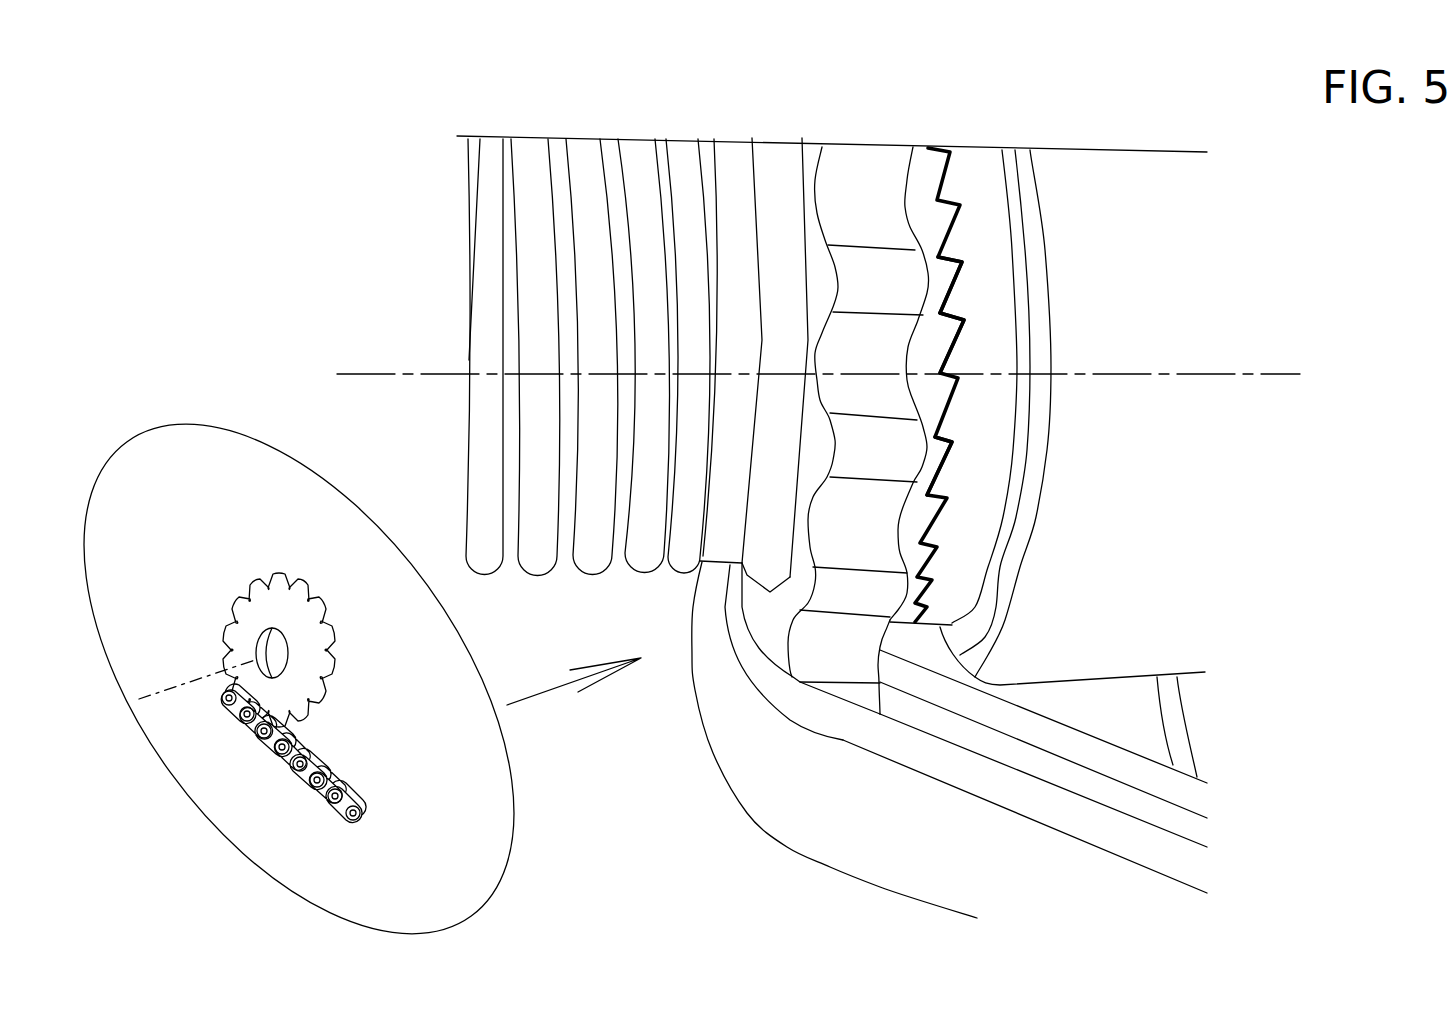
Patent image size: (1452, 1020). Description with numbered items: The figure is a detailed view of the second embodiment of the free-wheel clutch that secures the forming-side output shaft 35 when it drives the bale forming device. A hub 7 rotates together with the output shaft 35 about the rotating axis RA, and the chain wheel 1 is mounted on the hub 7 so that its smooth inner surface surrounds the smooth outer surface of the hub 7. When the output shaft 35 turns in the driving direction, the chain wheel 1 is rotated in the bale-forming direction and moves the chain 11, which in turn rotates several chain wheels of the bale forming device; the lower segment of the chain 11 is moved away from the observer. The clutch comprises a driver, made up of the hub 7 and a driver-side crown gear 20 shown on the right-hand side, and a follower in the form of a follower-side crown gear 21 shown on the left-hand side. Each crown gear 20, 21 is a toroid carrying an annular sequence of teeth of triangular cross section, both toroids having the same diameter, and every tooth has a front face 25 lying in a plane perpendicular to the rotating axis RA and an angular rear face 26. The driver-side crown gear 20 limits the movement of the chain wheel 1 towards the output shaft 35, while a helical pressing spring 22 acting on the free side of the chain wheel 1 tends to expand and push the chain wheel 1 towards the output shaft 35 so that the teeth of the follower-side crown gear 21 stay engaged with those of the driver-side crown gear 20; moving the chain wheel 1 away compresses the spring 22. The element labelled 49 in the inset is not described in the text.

The chain wheel 1 is at (858, 191).
The hub 7 is at (997, 558).
The chain 11 is at (1197, 862).
The driver-side crown gear 20 is at (992, 438).
The follower-side crown gear 21 is at (927, 502).
The helical pressing spring 22 is at (653, 199).
The front face 25 is at (950, 258).
The rear face 26 is at (957, 347).
The output shaft 35 is at (1183, 638).
The hub bore 49 is at (292, 655).
The rotating axis RA is at (436, 364).